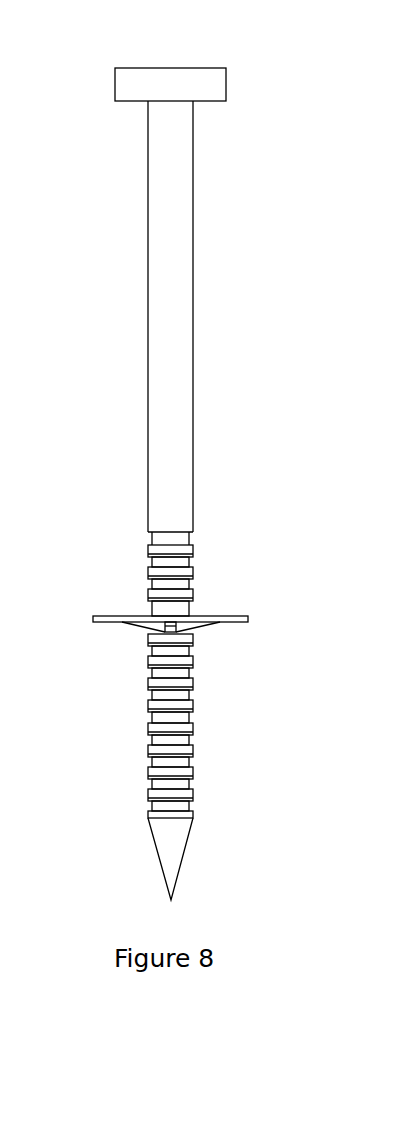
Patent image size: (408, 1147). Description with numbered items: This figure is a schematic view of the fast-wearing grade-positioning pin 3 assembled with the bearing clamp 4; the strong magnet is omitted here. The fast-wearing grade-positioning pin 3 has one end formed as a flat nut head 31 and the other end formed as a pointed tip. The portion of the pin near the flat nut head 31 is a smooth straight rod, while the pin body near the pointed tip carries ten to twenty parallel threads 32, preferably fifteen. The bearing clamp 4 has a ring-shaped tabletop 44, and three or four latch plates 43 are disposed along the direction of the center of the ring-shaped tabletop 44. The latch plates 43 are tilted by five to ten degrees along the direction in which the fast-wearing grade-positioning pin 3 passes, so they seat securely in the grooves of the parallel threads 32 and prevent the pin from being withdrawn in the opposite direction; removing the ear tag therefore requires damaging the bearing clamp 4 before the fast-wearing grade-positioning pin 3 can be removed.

The fast-wearing grade-positioning pin 3 is at (223, 316).
The flat nut head 31 is at (177, 87).
The parallel threads 32 is at (188, 742).
The bearing clamp 4 is at (183, 633).
The latch plates 43 is at (153, 626).
The ring-shaped tabletop 44 is at (132, 617).